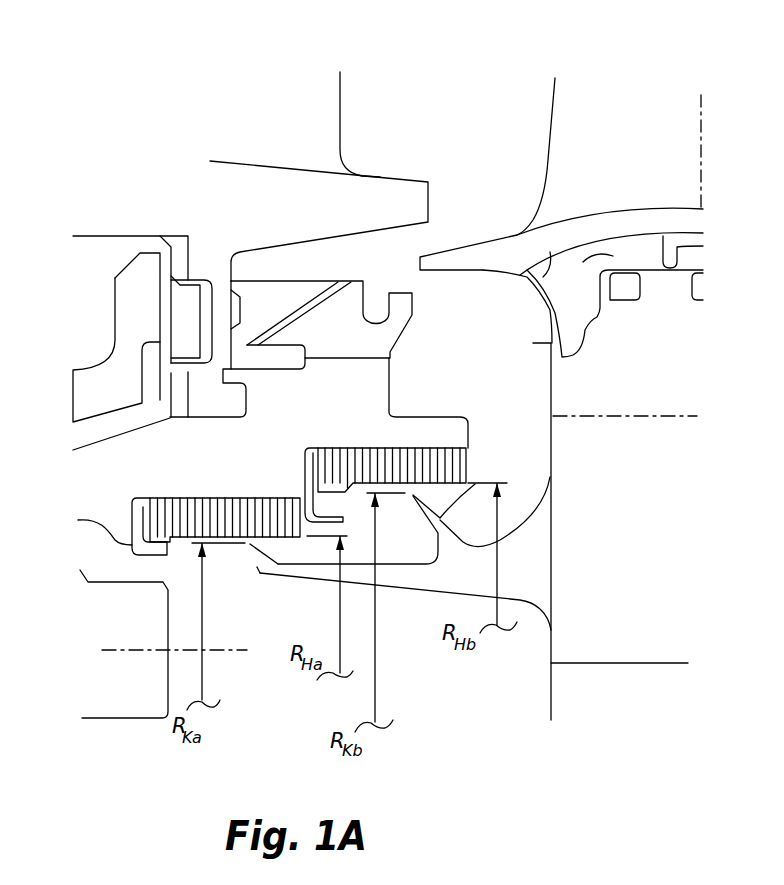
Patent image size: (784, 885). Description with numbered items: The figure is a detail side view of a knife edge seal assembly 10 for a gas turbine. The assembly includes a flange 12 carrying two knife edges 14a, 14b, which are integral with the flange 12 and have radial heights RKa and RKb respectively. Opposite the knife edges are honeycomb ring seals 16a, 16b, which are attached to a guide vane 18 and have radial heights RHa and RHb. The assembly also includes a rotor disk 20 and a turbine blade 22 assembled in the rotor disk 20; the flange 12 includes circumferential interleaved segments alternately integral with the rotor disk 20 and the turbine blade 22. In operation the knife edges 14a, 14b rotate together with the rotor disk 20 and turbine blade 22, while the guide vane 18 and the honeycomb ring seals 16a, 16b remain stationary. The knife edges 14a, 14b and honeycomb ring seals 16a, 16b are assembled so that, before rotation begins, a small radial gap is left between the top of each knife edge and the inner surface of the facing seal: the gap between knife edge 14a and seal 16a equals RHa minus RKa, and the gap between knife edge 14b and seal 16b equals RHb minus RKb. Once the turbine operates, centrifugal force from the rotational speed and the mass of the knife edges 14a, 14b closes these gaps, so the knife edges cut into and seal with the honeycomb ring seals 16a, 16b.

The knife edge seal assembly 10 is at (466, 147).
The flange 12 is at (457, 570).
The knife edge 14a is at (257, 567).
The knife edge 14b is at (470, 485).
The honeycomb ring seal 16a is at (185, 517).
The honeycomb ring seal 16b is at (368, 453).
The guide vane 18 is at (142, 470).
The rotor disk 20 is at (585, 690).
The turbine blade 22 is at (675, 137).